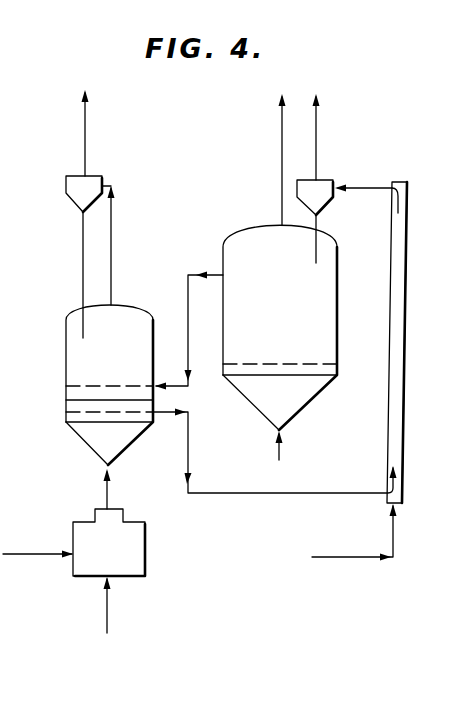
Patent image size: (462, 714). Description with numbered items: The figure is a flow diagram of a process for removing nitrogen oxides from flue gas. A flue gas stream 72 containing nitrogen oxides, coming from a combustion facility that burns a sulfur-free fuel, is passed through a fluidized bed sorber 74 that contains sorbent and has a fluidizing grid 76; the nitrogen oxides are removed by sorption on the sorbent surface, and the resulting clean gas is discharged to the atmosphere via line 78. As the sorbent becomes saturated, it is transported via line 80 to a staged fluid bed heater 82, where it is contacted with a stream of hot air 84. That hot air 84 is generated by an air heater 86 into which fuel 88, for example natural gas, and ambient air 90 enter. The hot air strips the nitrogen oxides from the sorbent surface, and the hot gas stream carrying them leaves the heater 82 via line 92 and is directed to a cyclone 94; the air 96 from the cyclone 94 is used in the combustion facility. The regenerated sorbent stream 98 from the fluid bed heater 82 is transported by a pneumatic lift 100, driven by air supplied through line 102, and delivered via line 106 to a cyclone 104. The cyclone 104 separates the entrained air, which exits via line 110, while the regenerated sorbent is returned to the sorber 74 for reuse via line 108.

The flue gas stream 72 is at (281, 457).
The fluidized bed sorber 74 is at (339, 311).
The fluidizing grid 76 is at (323, 363).
The line 78 is at (280, 153).
The line 80 is at (190, 331).
The staged fluid bed heater 82 is at (66, 350).
The stream of hot air 84 is at (110, 488).
The air heater 86 is at (147, 549).
The fuel 88 is at (37, 556).
The ambient air 90 is at (110, 611).
The line 92 is at (113, 221).
The cyclone 94 is at (75, 203).
The air 96 is at (87, 140).
The NOx free sorbent stream 98 is at (190, 452).
The pneumatic lift 100 is at (388, 422).
The line 102 is at (347, 558).
The cyclone 104 is at (322, 180).
The line 106 is at (362, 188).
The line 108 is at (318, 227).
The line 110 is at (318, 133).